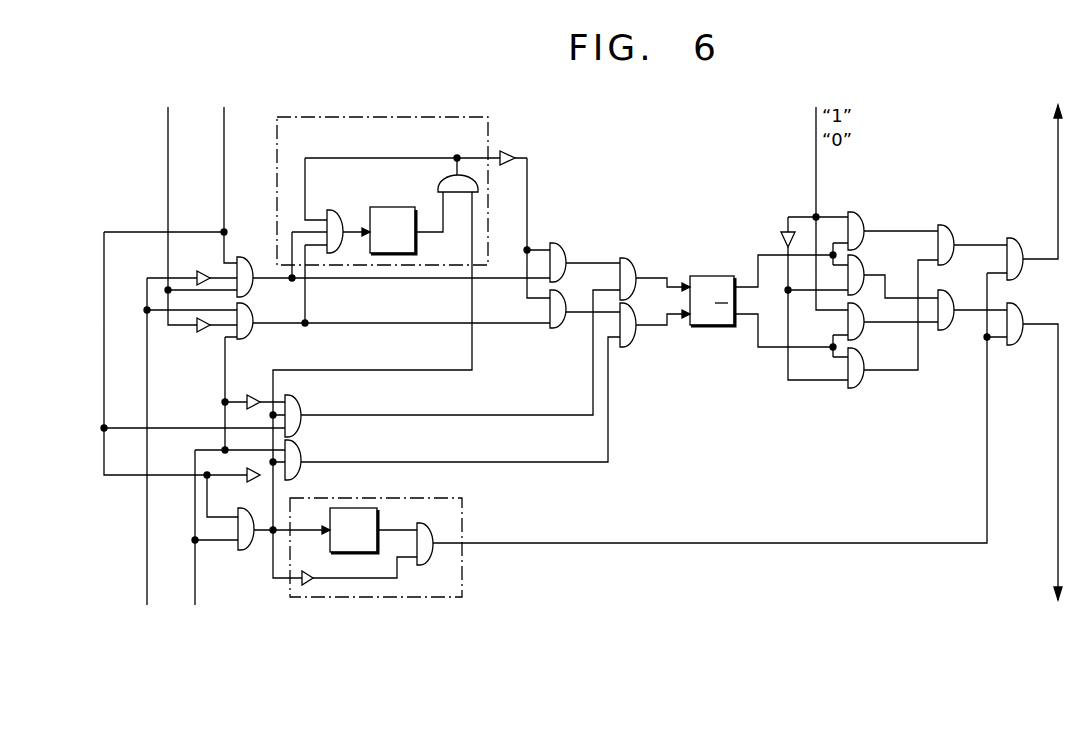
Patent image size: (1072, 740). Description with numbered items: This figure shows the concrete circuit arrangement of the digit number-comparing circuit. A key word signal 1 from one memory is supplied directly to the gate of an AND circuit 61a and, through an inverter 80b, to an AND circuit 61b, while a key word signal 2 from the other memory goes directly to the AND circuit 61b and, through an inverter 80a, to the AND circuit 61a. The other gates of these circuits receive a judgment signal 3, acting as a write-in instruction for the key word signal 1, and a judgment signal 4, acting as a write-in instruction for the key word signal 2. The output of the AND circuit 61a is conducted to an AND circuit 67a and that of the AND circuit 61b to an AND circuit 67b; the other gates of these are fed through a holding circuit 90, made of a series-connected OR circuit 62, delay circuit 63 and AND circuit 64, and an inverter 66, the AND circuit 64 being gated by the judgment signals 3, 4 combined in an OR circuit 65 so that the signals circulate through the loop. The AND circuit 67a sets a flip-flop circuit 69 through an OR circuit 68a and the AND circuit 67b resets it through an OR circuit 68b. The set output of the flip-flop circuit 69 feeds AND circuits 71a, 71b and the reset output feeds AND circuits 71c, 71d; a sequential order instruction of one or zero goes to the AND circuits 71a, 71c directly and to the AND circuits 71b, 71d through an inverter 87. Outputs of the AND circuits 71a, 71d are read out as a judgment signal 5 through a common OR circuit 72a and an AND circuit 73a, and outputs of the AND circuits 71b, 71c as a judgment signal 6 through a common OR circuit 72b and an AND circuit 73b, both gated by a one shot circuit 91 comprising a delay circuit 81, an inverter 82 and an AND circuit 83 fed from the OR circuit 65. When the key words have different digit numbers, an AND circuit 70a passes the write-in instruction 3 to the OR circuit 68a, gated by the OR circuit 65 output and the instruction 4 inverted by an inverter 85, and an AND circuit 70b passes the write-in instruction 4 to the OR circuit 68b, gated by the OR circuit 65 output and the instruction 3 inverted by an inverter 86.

The key word signal 1 is at (168, 90).
The key word signal 2 is at (147, 623).
The judgment signal 3 is at (224, 90).
The judgment signal 4 is at (195, 623).
The judgment signal 5 is at (1056, 85).
The judgment signal 6 is at (1057, 620).
The AND circuit 61a is at (243, 257).
The AND circuit 61b is at (252, 333).
The OR circuit 62 is at (333, 212).
The delay circuit 63 is at (388, 213).
The AND circuit 64 is at (441, 189).
The OR circuit 65 is at (254, 545).
The inverter 66 is at (508, 152).
The AND circuit 67a is at (558, 244).
The AND circuit 67b is at (558, 331).
The OR circuit 68a is at (635, 262).
The OR circuit 68b is at (631, 341).
The flip-flop circuit 69 is at (710, 277).
The AND circuit 70a is at (298, 410).
The AND circuit 70b is at (297, 460).
The AND circuit 71a is at (864, 224).
The AND circuit 71b is at (860, 268).
The AND circuit 71c is at (862, 339).
The AND circuit 71d is at (862, 387).
The OR circuit 72a is at (952, 238).
The OR circuit 72b is at (957, 329).
The AND circuit 73a is at (1020, 246).
The AND circuit 73b is at (1022, 339).
The inverter 80a is at (206, 272).
The inverter 80b is at (204, 332).
The delay circuit 81 is at (355, 508).
The inverter 82 is at (313, 588).
The AND circuit 83 is at (437, 560).
The inverter 85 is at (253, 397).
The inverter 86 is at (247, 478).
The inverter 87 is at (781, 237).
The holding circuit 90 is at (358, 117).
The one shot circuit 91 is at (413, 500).